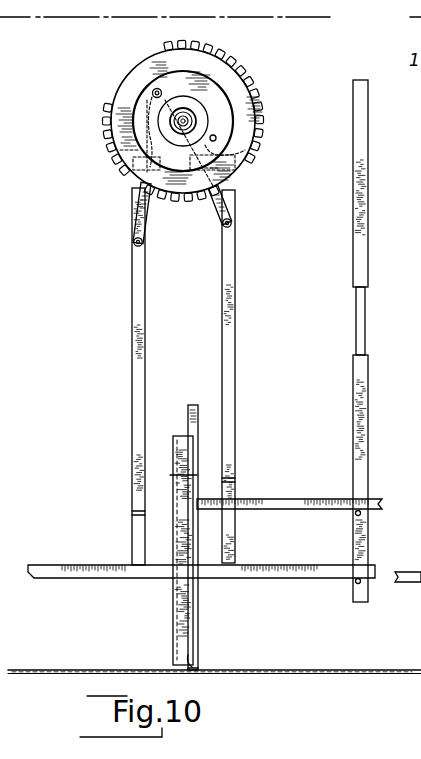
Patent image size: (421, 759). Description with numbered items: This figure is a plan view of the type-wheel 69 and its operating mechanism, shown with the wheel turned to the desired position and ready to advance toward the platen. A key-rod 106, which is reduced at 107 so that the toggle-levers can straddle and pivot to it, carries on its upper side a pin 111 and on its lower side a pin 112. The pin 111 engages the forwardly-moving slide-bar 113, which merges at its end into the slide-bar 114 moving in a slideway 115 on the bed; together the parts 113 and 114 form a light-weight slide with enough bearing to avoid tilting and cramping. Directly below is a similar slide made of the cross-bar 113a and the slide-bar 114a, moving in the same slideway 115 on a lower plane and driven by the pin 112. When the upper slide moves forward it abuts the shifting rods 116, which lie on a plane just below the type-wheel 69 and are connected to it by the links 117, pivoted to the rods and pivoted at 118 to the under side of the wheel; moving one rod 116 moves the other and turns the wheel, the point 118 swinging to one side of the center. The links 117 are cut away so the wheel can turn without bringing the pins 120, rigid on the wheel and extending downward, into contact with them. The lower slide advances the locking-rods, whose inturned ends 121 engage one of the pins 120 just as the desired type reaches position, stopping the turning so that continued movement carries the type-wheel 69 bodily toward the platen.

The type-wheel 69 is at (254, 84).
The key-rod 106 is at (369, 393).
The reduced portion of key-rod 107 is at (366, 326).
The upper pin 111 is at (366, 514).
The lower pin 112 is at (366, 586).
The slide-bar 113 is at (278, 500).
The lower slide-bar 113a is at (268, 565).
The slide-bar 114 is at (199, 452).
The lower slide-bar 114a is at (197, 607).
The slideway 115 is at (196, 673).
The shifting rod 116 is at (145, 396).
The link 117 is at (209, 216).
The pivot point of link on type-wheel 118 is at (153, 94).
The pin 120 is at (216, 138).
The inturned end of locking-rod 121 is at (134, 184).